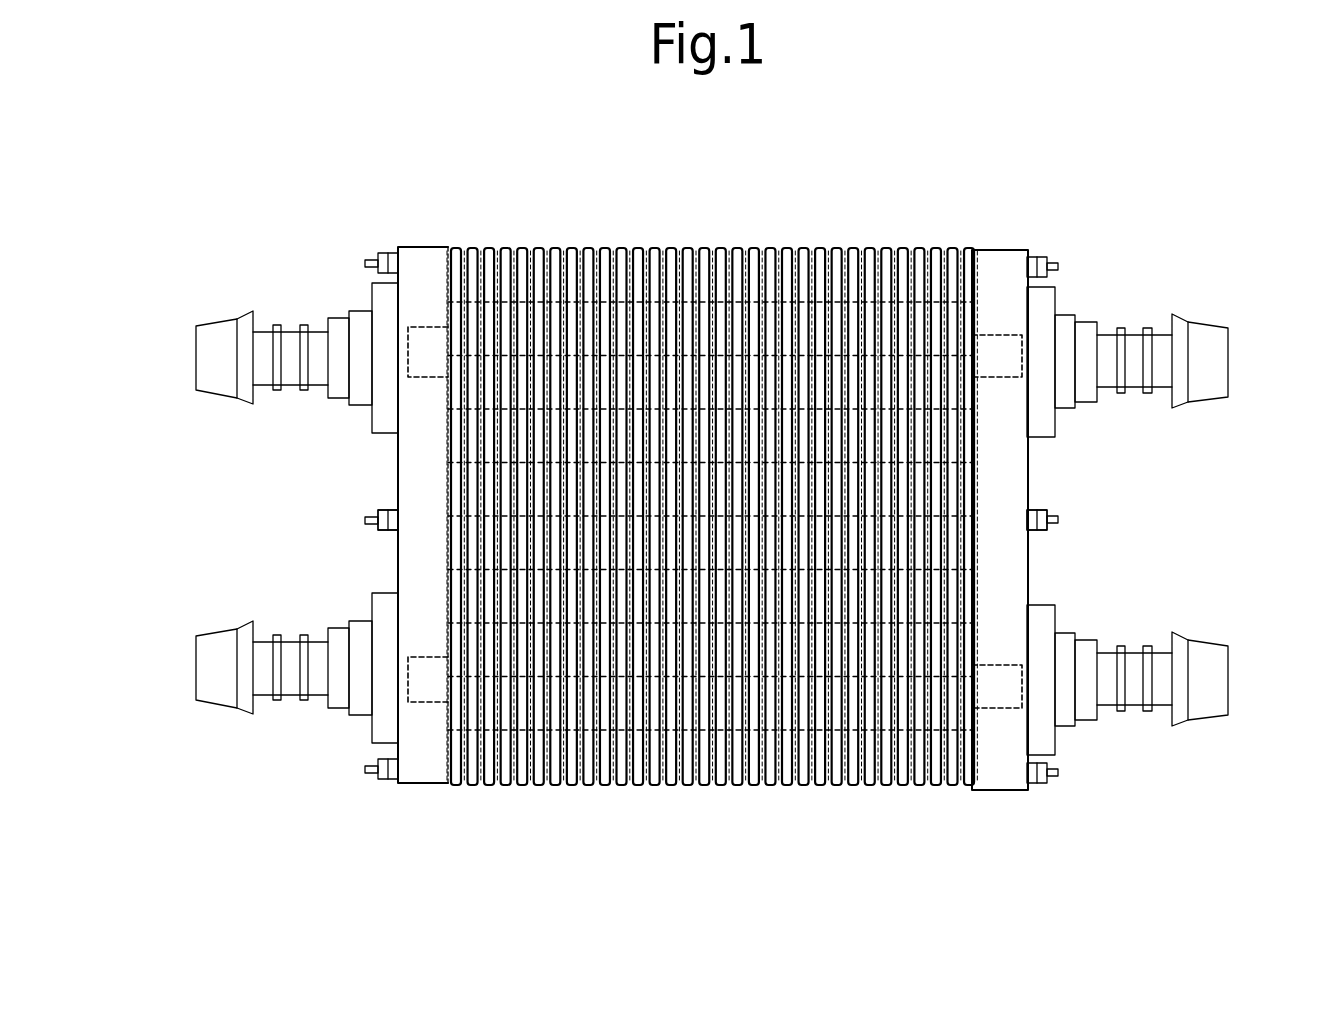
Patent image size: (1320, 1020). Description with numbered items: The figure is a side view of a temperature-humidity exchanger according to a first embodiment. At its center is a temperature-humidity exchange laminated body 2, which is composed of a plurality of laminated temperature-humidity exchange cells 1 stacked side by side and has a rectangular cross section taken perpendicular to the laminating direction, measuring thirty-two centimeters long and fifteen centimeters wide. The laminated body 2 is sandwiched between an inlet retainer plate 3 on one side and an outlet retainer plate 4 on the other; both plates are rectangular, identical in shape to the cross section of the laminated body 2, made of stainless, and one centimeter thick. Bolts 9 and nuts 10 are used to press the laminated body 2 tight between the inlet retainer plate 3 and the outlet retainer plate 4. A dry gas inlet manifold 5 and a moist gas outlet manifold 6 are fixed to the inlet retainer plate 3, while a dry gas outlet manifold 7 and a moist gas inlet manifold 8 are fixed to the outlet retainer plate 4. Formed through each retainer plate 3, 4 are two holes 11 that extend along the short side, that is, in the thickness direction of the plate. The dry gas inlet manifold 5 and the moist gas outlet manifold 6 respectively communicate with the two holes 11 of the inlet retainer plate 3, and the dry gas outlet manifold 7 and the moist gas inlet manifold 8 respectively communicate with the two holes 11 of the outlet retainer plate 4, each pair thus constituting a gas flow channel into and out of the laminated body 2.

The temperature-humidity exchange cell 1 is at (560, 247).
The temperature-humidity exchange laminated body 2 is at (730, 235).
The inlet retainer plate 3 is at (407, 248).
The outlet retainer plate 4 is at (998, 250).
The dry gas inlet manifold 5 is at (238, 315).
The moist gas outlet manifold 6 is at (222, 628).
The dry gas outlet manifold 7 is at (1205, 642).
The moist gas inlet manifold 8 is at (1195, 320).
The bolt 9 is at (367, 517).
The nut 10 is at (385, 532).
The hole 11 is at (428, 327).